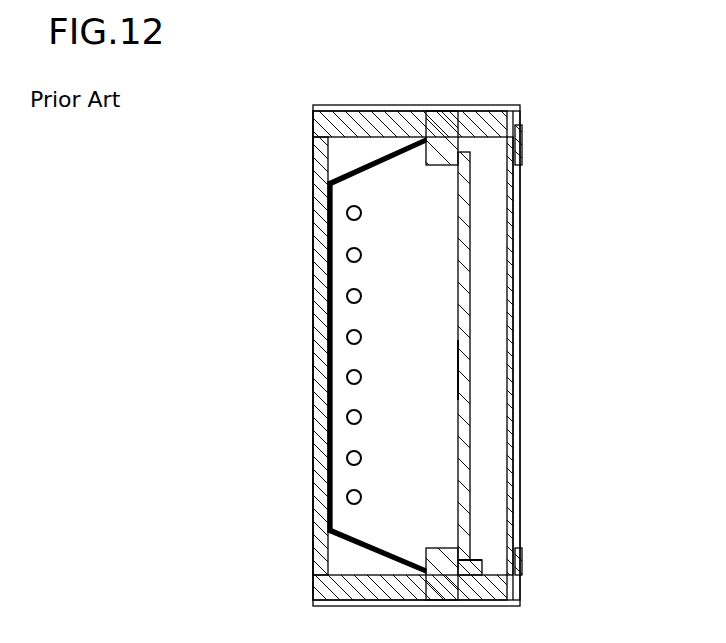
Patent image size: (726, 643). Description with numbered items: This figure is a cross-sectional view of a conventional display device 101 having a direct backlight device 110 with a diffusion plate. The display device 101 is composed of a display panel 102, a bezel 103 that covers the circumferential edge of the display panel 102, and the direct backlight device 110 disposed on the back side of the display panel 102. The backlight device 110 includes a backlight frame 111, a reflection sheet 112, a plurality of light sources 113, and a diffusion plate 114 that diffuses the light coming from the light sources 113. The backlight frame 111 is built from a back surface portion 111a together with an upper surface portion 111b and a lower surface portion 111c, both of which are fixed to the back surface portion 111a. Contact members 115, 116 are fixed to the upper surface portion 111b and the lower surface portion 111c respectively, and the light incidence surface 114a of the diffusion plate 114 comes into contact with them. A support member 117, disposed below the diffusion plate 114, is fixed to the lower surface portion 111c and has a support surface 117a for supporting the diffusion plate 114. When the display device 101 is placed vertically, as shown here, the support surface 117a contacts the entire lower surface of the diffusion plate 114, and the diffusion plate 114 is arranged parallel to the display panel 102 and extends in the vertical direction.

The display device 101 is at (538, 92).
The display panel 102 is at (512, 248).
The bezel 103 is at (522, 120).
The direct backlight device 110 is at (297, 132).
The backlight frame 111 is at (346, 357).
The back surface portion 111a is at (330, 183).
The upper surface portion 111b is at (355, 118).
The lower surface portion 111c is at (355, 592).
The reflection sheet 112 is at (370, 161).
The light sources 113 is at (347, 215).
The diffusion plate 114 is at (465, 327).
The light incidence surface 114a is at (458, 370).
The contact member 115 is at (438, 120).
The contact member 116 is at (445, 595).
The support member 117 is at (470, 576).
The support surface 117a is at (472, 562).